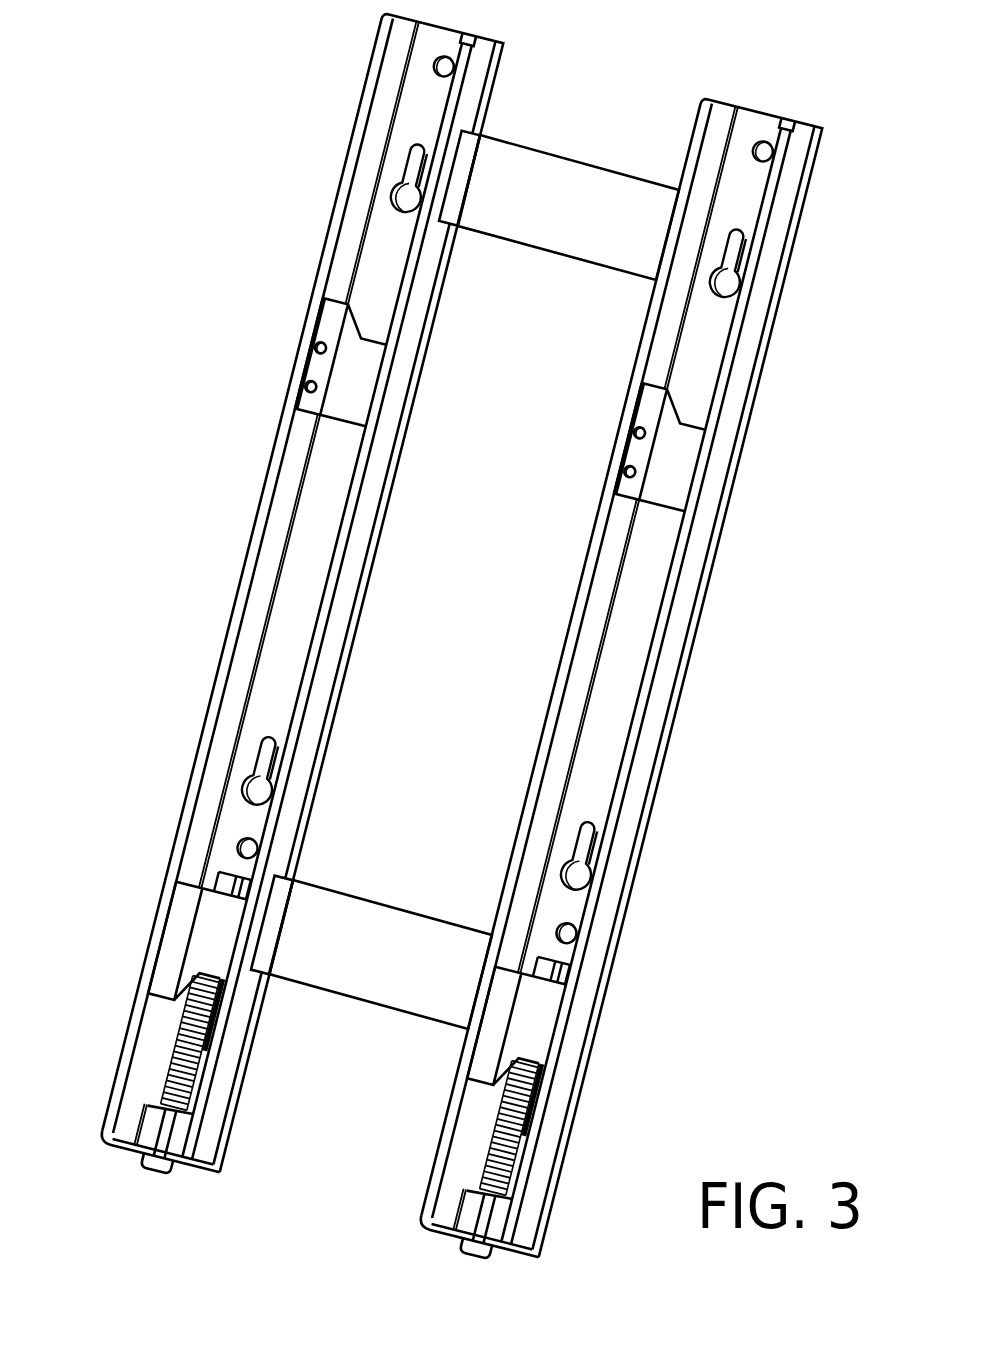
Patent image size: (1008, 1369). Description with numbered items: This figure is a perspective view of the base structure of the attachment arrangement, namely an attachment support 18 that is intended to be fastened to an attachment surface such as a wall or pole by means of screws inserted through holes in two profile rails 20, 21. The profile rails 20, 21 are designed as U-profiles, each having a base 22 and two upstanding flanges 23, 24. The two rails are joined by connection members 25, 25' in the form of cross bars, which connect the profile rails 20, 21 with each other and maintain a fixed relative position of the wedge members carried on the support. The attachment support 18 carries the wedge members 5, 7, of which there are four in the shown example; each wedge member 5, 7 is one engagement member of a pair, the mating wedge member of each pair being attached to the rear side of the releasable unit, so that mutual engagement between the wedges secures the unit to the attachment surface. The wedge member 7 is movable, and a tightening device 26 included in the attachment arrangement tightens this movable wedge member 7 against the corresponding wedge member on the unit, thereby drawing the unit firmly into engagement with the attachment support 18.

The wedge member 5 is at (345, 343).
The movable wedge member 7 is at (167, 963).
The attachment support 18 is at (100, 1120).
The profile rail 20 is at (294, 593).
The profile rail 21 is at (618, 684).
The base 22 is at (412, 125).
The upstanding flange 23 is at (383, 86).
The upstanding flange 24 is at (472, 93).
The connection member 25 is at (559, 152).
The connection member 25' is at (371, 935).
The tightening device 26 is at (528, 1163).